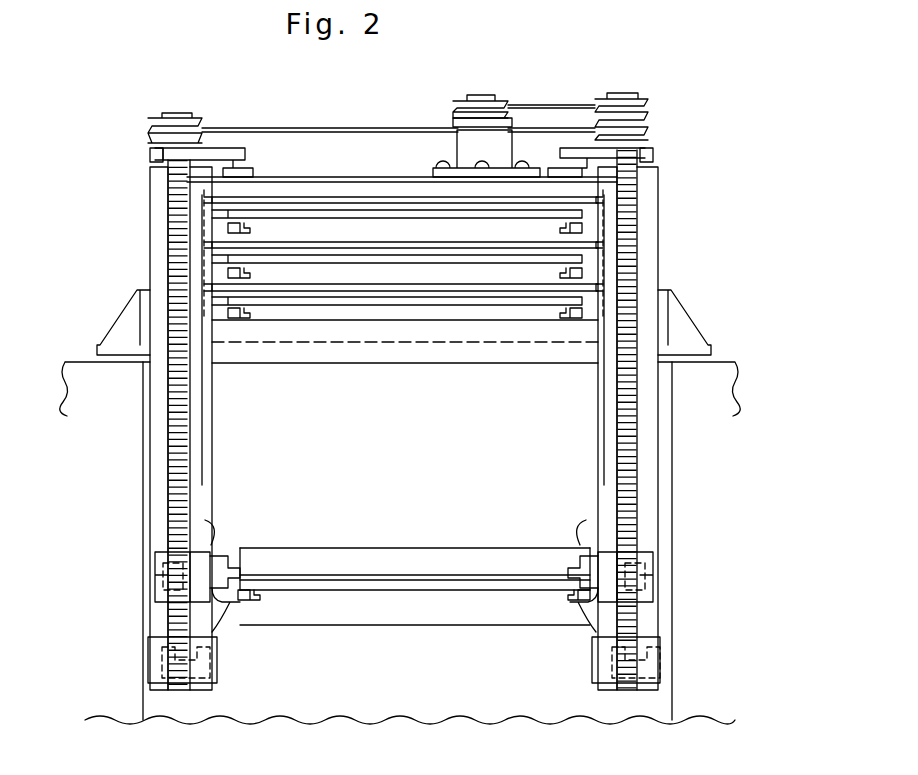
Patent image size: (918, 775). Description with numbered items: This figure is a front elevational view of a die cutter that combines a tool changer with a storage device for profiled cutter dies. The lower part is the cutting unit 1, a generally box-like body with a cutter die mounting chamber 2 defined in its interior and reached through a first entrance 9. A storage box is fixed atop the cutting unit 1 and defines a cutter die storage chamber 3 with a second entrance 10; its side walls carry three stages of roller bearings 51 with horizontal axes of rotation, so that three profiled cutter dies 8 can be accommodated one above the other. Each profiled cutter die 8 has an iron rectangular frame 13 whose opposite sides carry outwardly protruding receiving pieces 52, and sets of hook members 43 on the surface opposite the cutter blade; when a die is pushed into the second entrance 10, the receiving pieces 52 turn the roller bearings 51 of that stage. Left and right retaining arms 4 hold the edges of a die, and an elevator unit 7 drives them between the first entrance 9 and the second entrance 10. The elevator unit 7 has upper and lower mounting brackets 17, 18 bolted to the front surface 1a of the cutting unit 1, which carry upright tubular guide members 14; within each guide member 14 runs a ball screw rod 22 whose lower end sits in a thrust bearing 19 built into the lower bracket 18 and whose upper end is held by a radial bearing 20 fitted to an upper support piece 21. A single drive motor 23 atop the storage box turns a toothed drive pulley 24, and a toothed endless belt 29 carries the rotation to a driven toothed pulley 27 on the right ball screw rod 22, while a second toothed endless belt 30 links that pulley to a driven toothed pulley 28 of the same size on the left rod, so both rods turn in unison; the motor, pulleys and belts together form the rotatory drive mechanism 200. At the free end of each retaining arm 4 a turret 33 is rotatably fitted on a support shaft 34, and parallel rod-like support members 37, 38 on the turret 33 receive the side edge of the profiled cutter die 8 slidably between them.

The cutting unit 1 is at (660, 440).
The front surface 1a is at (682, 470).
The cutter die mounting chamber 2 is at (432, 560).
The cutter die storage chamber 3 is at (352, 226).
The retaining arm 4 is at (180, 554).
The elevator unit 7 is at (660, 162).
The profiled cutter die 8 is at (384, 200).
The first entrance 9 is at (366, 546).
The second entrance 10 is at (364, 320).
The rectangular frame 13 is at (410, 576).
The guide member 14 is at (200, 420).
The upper mounting bracket 17 is at (124, 320).
The lower mounting bracket 18 is at (218, 654).
The thrust bearing 19 is at (160, 668).
The radial bearing 20 is at (155, 154).
The upper support piece 21 is at (245, 155).
The ball screw rod 22 is at (190, 222).
The drive motor 23 is at (455, 153).
The toothed drive pulley 24 is at (502, 104).
The driven toothed pulley 27 is at (644, 100).
The driven toothed pulley 28 is at (202, 117).
The toothed endless belt 29 is at (566, 108).
The toothed endless belt 30 is at (306, 128).
The turret 33 is at (200, 592).
The support shaft 34 is at (162, 585).
The support member 37 is at (228, 556).
The support member 38 is at (226, 602).
The hook member 43 is at (250, 230).
The roller bearing 51 is at (212, 272).
The receiving piece 52 is at (210, 201).
The rotatory drive mechanism 200 is at (639, 76).